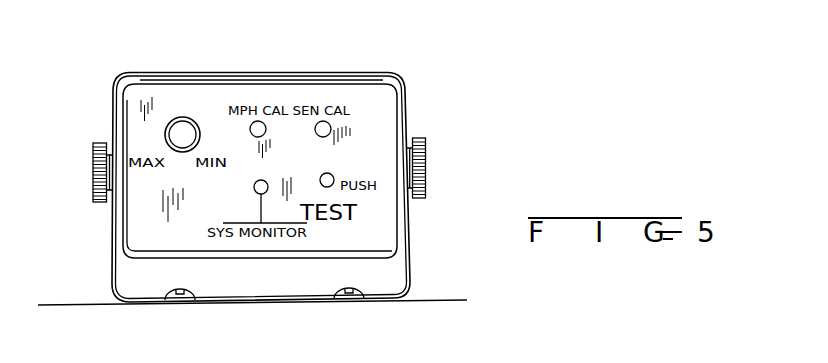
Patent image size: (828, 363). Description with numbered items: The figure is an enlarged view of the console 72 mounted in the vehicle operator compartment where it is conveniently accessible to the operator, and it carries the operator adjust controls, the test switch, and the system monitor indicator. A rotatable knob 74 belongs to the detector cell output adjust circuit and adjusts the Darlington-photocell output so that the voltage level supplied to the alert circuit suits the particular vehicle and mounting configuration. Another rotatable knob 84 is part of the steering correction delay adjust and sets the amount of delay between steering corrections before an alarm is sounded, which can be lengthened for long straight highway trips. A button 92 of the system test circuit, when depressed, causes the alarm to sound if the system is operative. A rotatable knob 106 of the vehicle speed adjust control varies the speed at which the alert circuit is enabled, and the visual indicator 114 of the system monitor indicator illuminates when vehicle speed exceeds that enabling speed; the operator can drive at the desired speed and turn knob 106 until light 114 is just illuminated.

The console 72 is at (401, 69).
The rotatable knob 84 is at (178, 130).
The rotatable knob 106 is at (253, 136).
The rotatable knob 74 is at (330, 125).
The visual indicator 114 is at (265, 181).
The button 92 is at (332, 176).